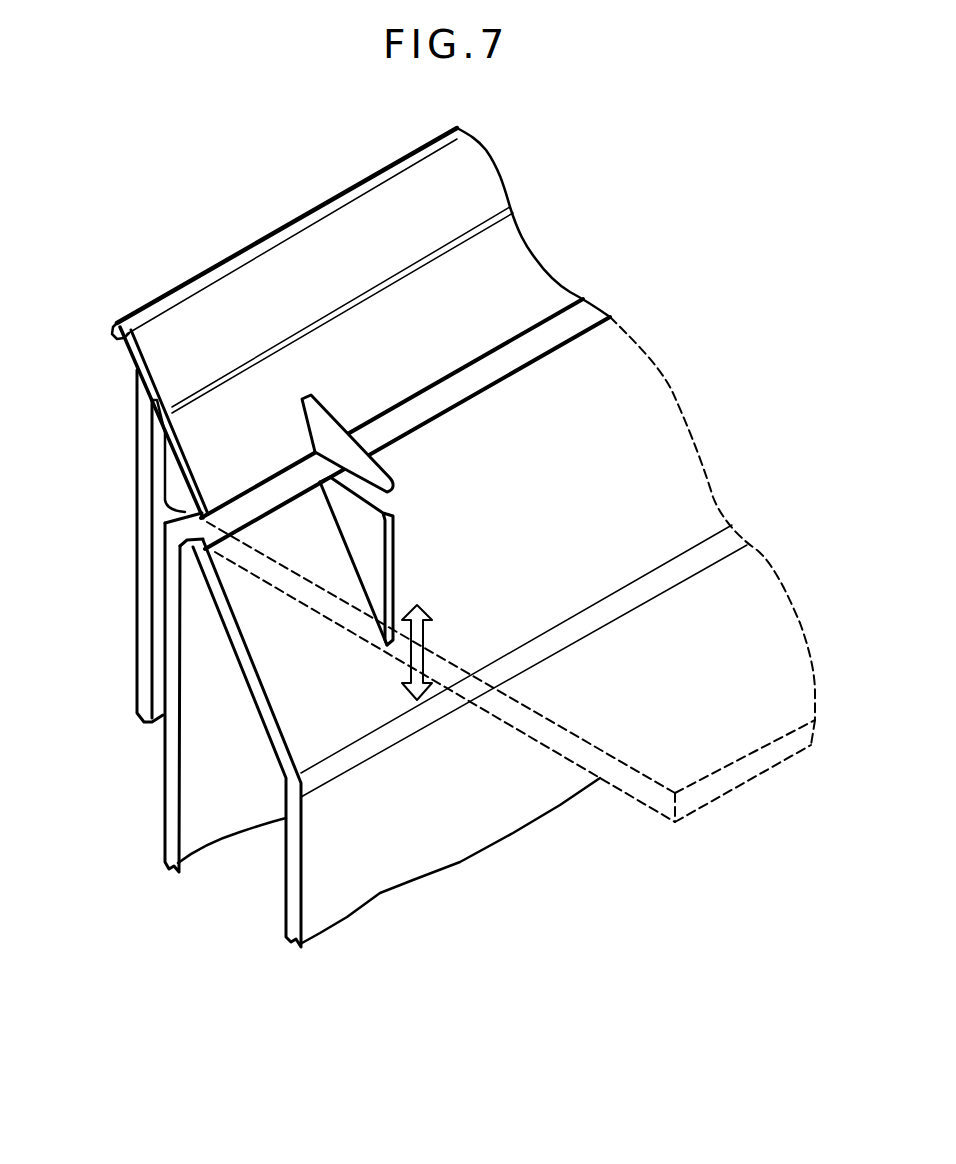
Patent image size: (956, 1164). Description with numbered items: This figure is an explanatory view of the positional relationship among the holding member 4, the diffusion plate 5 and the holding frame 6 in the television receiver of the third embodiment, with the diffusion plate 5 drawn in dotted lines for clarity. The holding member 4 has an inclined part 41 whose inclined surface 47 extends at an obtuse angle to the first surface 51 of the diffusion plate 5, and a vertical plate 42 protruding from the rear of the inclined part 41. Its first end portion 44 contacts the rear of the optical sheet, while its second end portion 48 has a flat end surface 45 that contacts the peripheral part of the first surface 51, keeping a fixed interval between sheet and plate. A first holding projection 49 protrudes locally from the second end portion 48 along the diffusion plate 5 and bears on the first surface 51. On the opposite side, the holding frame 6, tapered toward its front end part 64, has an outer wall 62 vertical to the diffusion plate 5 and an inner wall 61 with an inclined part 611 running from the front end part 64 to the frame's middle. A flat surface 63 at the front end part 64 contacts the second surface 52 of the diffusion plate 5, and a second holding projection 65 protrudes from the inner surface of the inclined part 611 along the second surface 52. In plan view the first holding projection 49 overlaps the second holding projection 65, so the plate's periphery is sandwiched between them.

The holding member 4 is at (126, 404).
The inclined part 41 is at (138, 356).
The vertical plate 42 is at (142, 634).
The first end portion 44 is at (114, 326).
The end surface 45 is at (176, 522).
The inclined surface 47 is at (513, 270).
The second end portion 48 is at (182, 497).
The first holding projection 49 is at (332, 420).
The diffusion plate 5 is at (722, 486).
The first surface 51 is at (653, 417).
The second surface 52 is at (640, 800).
The holding frame 6 is at (157, 778).
The inner wall 61 is at (292, 908).
The inclined part 611 is at (262, 690).
The outer wall 62 is at (170, 823).
The flat surface 63 is at (200, 546).
The front end part 64 is at (180, 548).
The second holding projection 65 is at (392, 511).